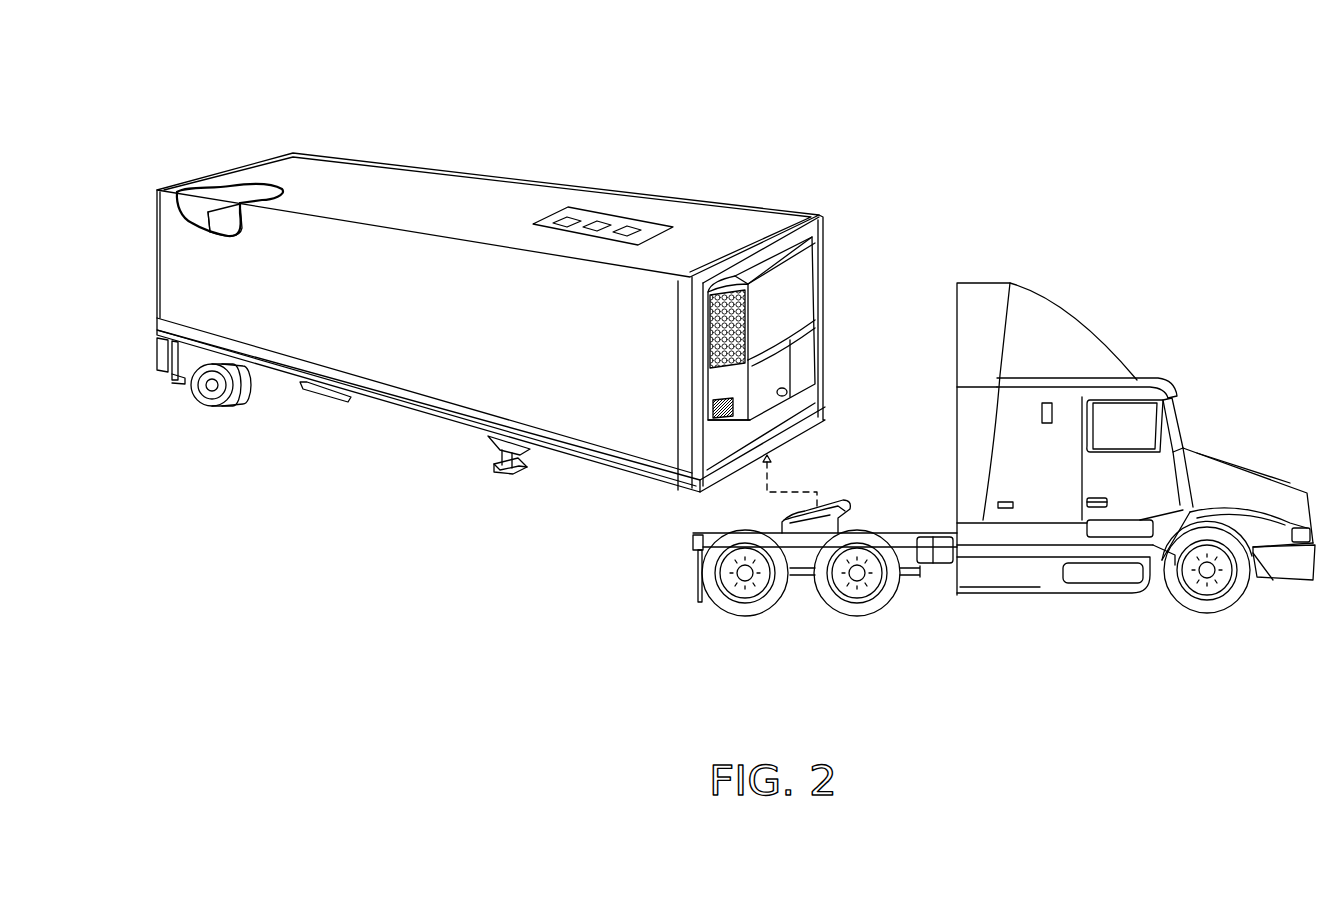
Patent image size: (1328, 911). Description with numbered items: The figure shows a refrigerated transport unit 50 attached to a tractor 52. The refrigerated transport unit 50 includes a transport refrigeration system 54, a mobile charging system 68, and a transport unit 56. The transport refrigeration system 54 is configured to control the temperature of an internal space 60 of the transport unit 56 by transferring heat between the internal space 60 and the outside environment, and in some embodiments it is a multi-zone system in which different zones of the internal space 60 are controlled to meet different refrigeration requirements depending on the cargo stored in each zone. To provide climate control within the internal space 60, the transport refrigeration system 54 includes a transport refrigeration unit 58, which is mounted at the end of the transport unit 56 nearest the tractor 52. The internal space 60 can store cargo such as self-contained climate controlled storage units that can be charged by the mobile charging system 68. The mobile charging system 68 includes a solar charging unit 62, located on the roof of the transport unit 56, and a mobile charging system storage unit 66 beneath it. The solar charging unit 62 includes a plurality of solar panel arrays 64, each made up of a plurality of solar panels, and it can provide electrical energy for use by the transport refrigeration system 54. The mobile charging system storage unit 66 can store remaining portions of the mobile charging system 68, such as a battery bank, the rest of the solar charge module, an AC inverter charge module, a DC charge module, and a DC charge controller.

The refrigerated transport unit 50 is at (414, 88).
The tractor 52 is at (1084, 338).
The transport refrigeration system 54 is at (773, 187).
The transport unit 56 is at (427, 375).
The transport refrigeration unit 58 is at (788, 312).
The internal space 60 is at (198, 201).
The solar charging unit 62 is at (652, 227).
The solar panel arrays 64 is at (562, 216).
The mobile charging system storage unit 66 is at (313, 389).
The mobile charging system 68 is at (337, 148).